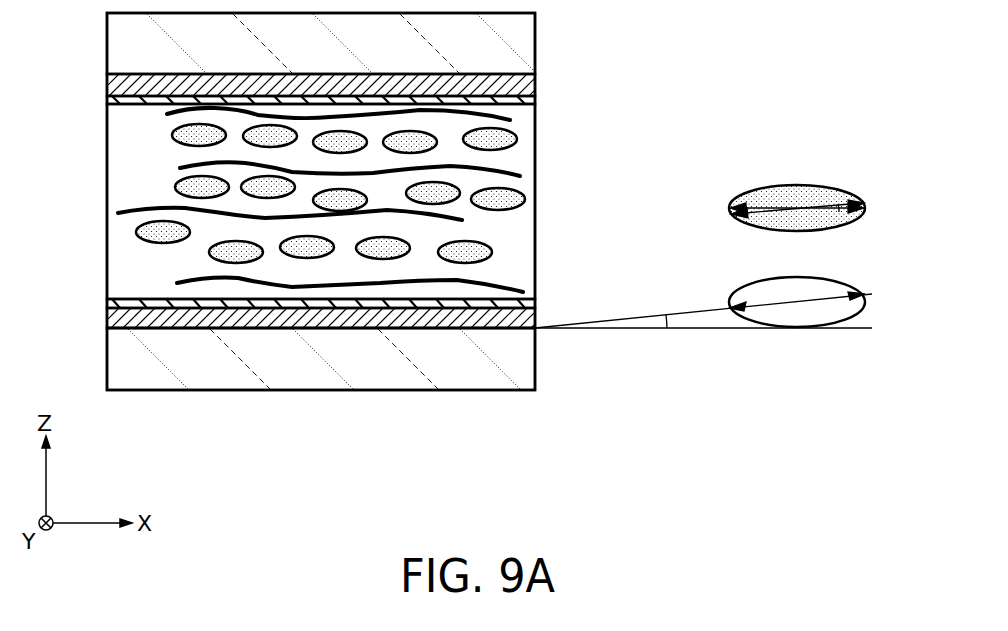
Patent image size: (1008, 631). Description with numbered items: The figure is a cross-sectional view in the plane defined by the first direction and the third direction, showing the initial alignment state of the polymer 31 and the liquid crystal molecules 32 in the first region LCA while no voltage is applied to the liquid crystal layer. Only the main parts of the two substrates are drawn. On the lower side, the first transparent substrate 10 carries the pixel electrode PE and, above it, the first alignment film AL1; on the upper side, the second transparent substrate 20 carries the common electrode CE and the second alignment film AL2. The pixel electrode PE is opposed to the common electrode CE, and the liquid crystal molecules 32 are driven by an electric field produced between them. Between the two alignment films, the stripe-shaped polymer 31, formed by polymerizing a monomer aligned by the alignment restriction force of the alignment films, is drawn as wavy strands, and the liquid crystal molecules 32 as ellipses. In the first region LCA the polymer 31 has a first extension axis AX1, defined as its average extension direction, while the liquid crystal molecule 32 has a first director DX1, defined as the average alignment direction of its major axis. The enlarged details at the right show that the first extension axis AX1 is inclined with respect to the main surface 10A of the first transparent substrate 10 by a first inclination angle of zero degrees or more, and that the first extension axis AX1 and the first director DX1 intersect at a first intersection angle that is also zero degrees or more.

The second transparent substrate 20 is at (118, 40).
The common electrode CE is at (117, 86).
The second alignment film AL2 is at (117, 100).
The liquid crystal molecule 32 is at (517, 136).
The polymer 31 is at (457, 218).
The first region LCA is at (118, 250).
The first alignment film AL1 is at (117, 302).
The pixel electrode PE is at (117, 318).
The first transparent substrate 10 is at (118, 362).
The main surface of the first transparent substrate 10A is at (466, 314).
The first director DX1 is at (765, 198).
The first extension axis AX1 is at (743, 228).